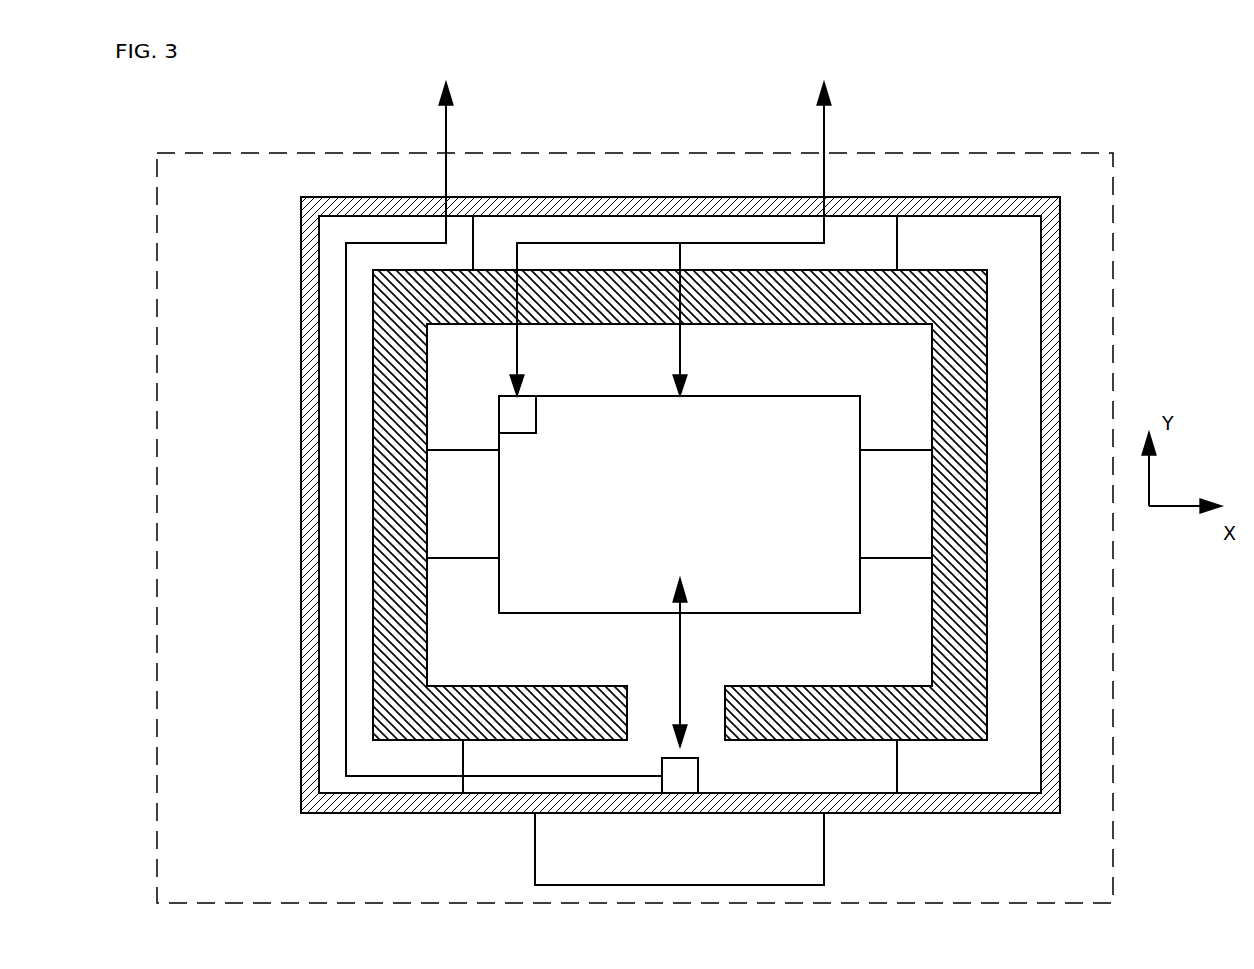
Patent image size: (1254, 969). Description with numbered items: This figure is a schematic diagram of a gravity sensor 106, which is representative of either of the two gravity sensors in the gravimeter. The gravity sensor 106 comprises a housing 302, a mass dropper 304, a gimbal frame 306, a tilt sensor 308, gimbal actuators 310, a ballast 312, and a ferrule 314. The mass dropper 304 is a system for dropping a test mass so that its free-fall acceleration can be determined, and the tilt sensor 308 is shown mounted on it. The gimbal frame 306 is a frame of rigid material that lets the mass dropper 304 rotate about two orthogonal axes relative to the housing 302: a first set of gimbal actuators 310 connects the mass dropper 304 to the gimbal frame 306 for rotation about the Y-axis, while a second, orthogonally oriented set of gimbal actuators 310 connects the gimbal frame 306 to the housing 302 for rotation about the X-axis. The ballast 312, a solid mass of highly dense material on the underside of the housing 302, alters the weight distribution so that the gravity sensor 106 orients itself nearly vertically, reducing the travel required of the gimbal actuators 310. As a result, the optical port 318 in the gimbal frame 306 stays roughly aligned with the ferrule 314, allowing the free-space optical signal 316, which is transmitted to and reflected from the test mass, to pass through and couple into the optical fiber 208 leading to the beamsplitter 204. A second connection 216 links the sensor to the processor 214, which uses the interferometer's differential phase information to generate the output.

The gravity sensor 106 is at (333, 187).
The housing 302 is at (353, 813).
The mass dropper 304 is at (760, 431).
The gimbal frame 306 is at (527, 667).
The tilt sensor 308 is at (527, 433).
The gimbal actuators 310 is at (897, 252).
The ballast 312 is at (824, 830).
The ferrule 314 is at (688, 777).
The optical signal 316 is at (680, 620).
The optical port 318 is at (698, 695).
The optical fiber 208 is at (447, 117).
The signal path to/from processor 216 is at (826, 117).
The beamsplitter 204 is at (504, 65).
The processor 214 is at (868, 65).